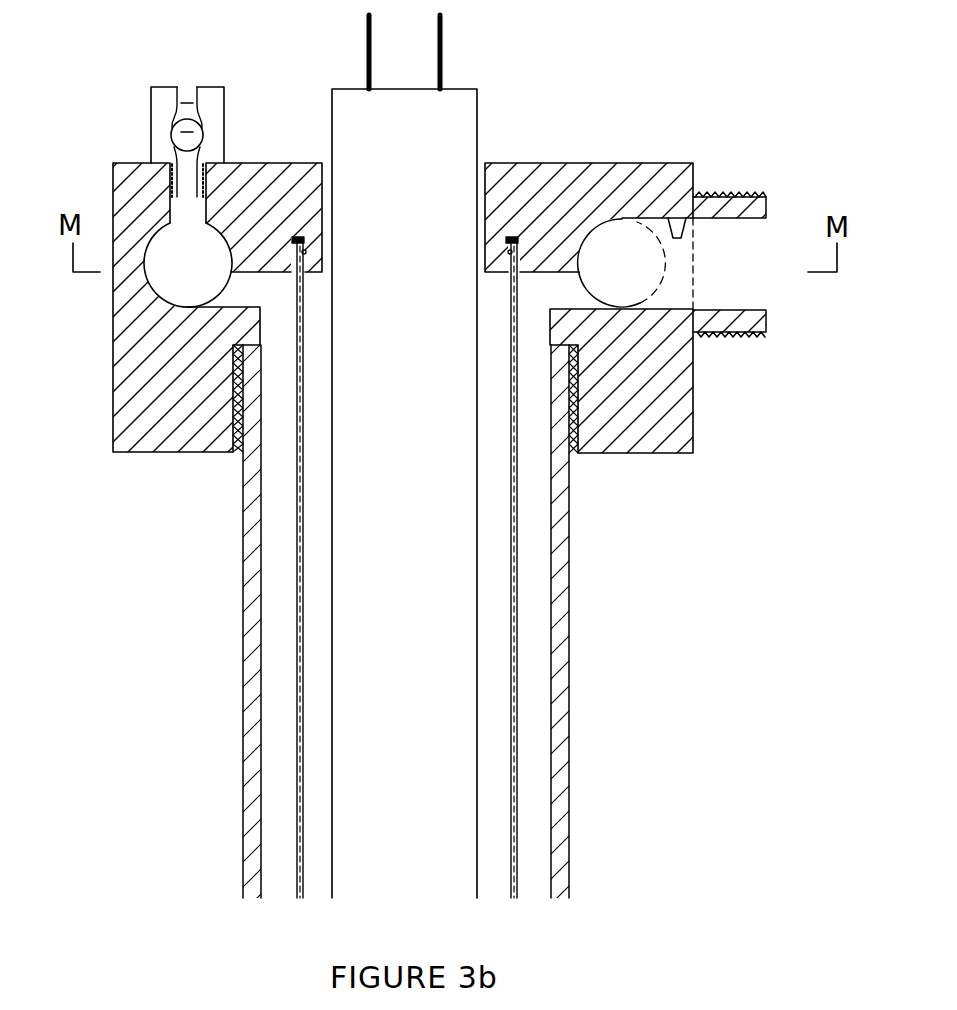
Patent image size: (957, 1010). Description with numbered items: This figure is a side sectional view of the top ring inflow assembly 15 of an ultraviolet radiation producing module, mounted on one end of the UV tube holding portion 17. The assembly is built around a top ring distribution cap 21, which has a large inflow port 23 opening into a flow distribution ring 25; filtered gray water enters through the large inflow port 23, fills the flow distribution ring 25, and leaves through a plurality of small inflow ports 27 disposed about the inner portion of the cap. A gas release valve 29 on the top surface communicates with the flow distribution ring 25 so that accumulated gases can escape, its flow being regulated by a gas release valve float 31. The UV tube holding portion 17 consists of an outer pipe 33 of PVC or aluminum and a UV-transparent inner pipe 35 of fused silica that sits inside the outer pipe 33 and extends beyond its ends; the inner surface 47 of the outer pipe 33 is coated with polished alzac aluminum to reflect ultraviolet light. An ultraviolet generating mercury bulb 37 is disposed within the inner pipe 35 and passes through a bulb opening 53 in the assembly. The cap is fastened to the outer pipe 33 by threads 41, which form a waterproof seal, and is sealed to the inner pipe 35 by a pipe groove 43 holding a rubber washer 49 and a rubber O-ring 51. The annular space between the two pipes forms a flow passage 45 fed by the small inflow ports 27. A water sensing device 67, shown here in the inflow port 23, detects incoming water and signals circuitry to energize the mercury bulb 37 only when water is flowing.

The top ring inflow assembly 15 is at (596, 143).
The UV tube holding portion 17 is at (576, 600).
The top ring distribution cap 21 is at (697, 413).
The large inflow port 23 is at (738, 265).
The flow distribution ring 25 is at (404, 263).
The small inflow ports 27 is at (403, 295).
The gas release valve 29 is at (158, 131).
The gas release valve float 31 is at (210, 113).
The outer pipe 33 is at (243, 667).
The inner pipe 35 is at (510, 458).
The mercury bulb 37 is at (479, 110).
The threads 41 is at (239, 455).
The pipe groove 43 is at (302, 277).
The flow passage 45 is at (277, 837).
The inner surface 47 is at (262, 781).
The rubber washer 49 is at (294, 235).
The rubber O-ring 51 is at (508, 252).
The bulb opening 53 is at (408, 185).
The water sensing device 67 is at (688, 237).